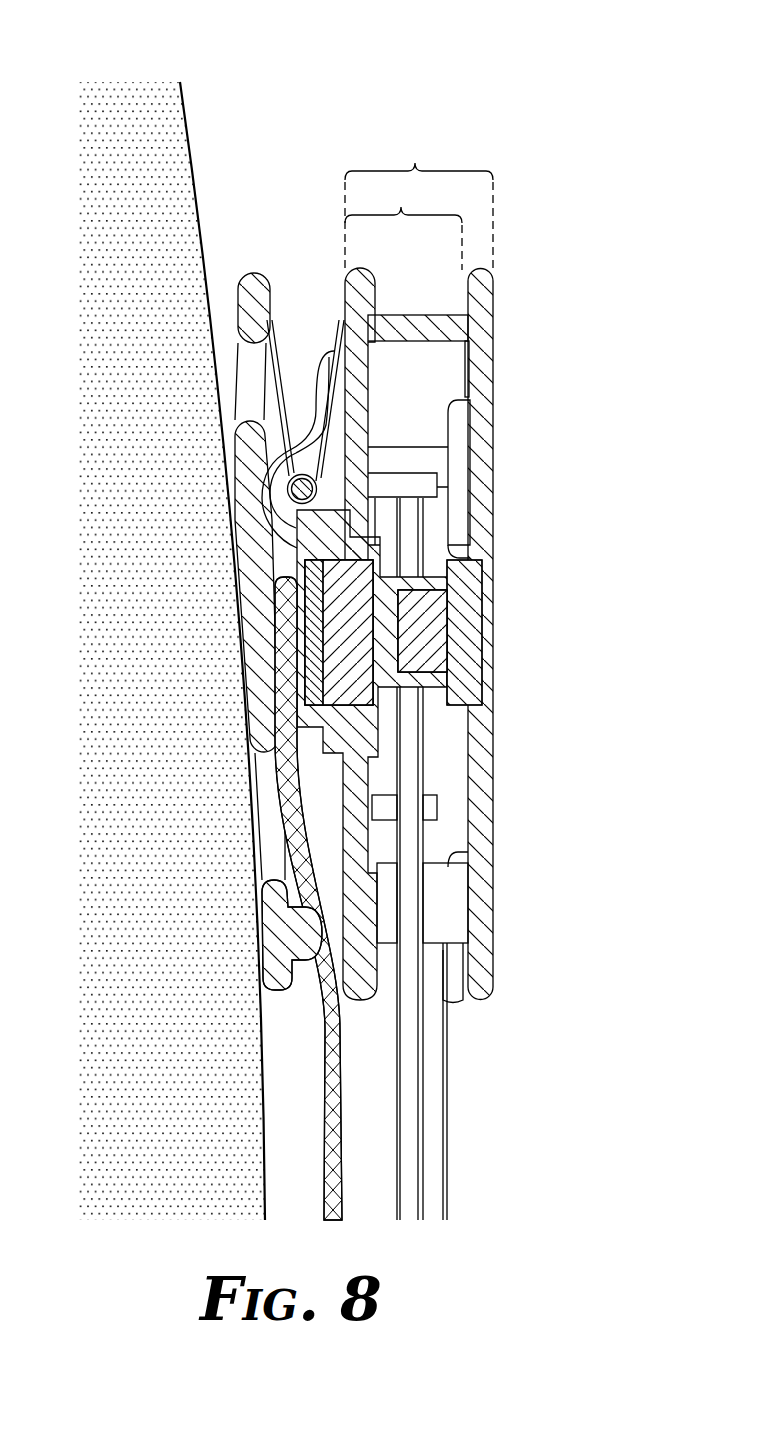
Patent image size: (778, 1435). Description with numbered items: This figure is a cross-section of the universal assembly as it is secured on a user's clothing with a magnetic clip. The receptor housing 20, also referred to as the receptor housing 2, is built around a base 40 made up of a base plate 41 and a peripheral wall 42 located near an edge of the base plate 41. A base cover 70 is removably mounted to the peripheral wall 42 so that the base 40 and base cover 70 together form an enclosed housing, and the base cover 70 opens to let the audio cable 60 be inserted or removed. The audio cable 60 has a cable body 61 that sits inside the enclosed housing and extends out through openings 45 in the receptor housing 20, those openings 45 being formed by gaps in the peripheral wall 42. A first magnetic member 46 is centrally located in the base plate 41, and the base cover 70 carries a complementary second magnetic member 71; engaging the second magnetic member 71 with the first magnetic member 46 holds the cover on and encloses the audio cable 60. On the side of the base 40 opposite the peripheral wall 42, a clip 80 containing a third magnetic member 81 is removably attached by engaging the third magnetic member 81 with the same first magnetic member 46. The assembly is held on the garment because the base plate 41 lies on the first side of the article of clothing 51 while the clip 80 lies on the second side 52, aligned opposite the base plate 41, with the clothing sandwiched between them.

The receptor housing 2 is at (127, 82).
The receptor housing 20 is at (419, 203).
The base 40 is at (403, 225).
The base plate 41 is at (363, 268).
The peripheral wall 42 is at (430, 317).
The base cover 70 is at (477, 268).
The second magnetic member 71 is at (472, 593).
The first magnetic member 46 is at (437, 653).
The third magnetic member 81 is at (352, 615).
The first side of an article of clothing 51 is at (326, 843).
The cable body 61 is at (425, 757).
The openings 45 is at (443, 997).
The second side of an article of clothing 52 is at (327, 847).
The clip 80 is at (277, 992).
The audio cable 60 is at (457, 1110).